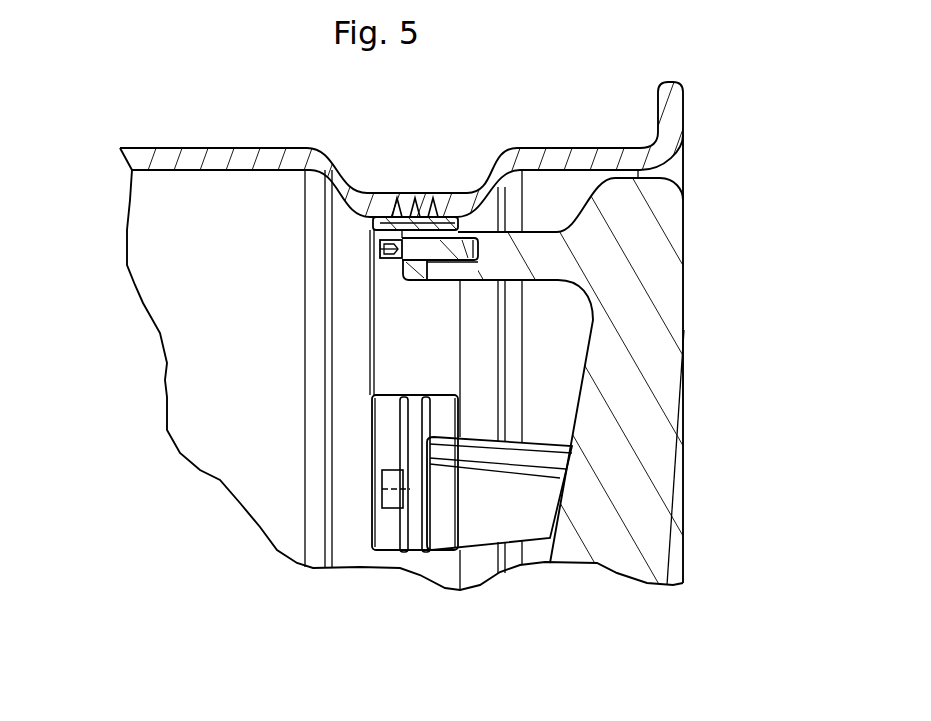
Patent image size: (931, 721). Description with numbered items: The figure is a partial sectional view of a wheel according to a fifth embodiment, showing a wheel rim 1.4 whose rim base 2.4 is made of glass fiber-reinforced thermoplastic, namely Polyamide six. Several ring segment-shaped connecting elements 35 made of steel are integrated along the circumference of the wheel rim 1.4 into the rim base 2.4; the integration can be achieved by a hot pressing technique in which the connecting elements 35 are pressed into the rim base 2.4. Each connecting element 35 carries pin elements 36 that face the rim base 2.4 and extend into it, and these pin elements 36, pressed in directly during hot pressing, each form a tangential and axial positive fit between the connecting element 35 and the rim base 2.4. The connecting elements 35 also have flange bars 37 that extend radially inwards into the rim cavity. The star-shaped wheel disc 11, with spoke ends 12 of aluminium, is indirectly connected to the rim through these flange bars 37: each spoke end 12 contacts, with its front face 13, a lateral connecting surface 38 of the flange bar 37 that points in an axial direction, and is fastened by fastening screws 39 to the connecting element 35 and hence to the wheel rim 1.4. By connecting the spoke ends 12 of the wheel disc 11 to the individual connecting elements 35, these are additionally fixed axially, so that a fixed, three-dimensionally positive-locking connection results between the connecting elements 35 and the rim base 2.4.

The wheel rim 1.4 is at (707, 76).
The rim base 2.4 is at (260, 147).
The star-shaped wheel disc 11 is at (632, 390).
The spoke ends 12 is at (545, 253).
The front faces 13 is at (597, 432).
The lateral connecting surface 38 is at (427, 270).
The ring segment-shaped connecting elements 35 is at (372, 220).
The pin elements 36 is at (396, 212).
The flange bars 37 is at (405, 278).
The fastening screws 39 is at (388, 265).